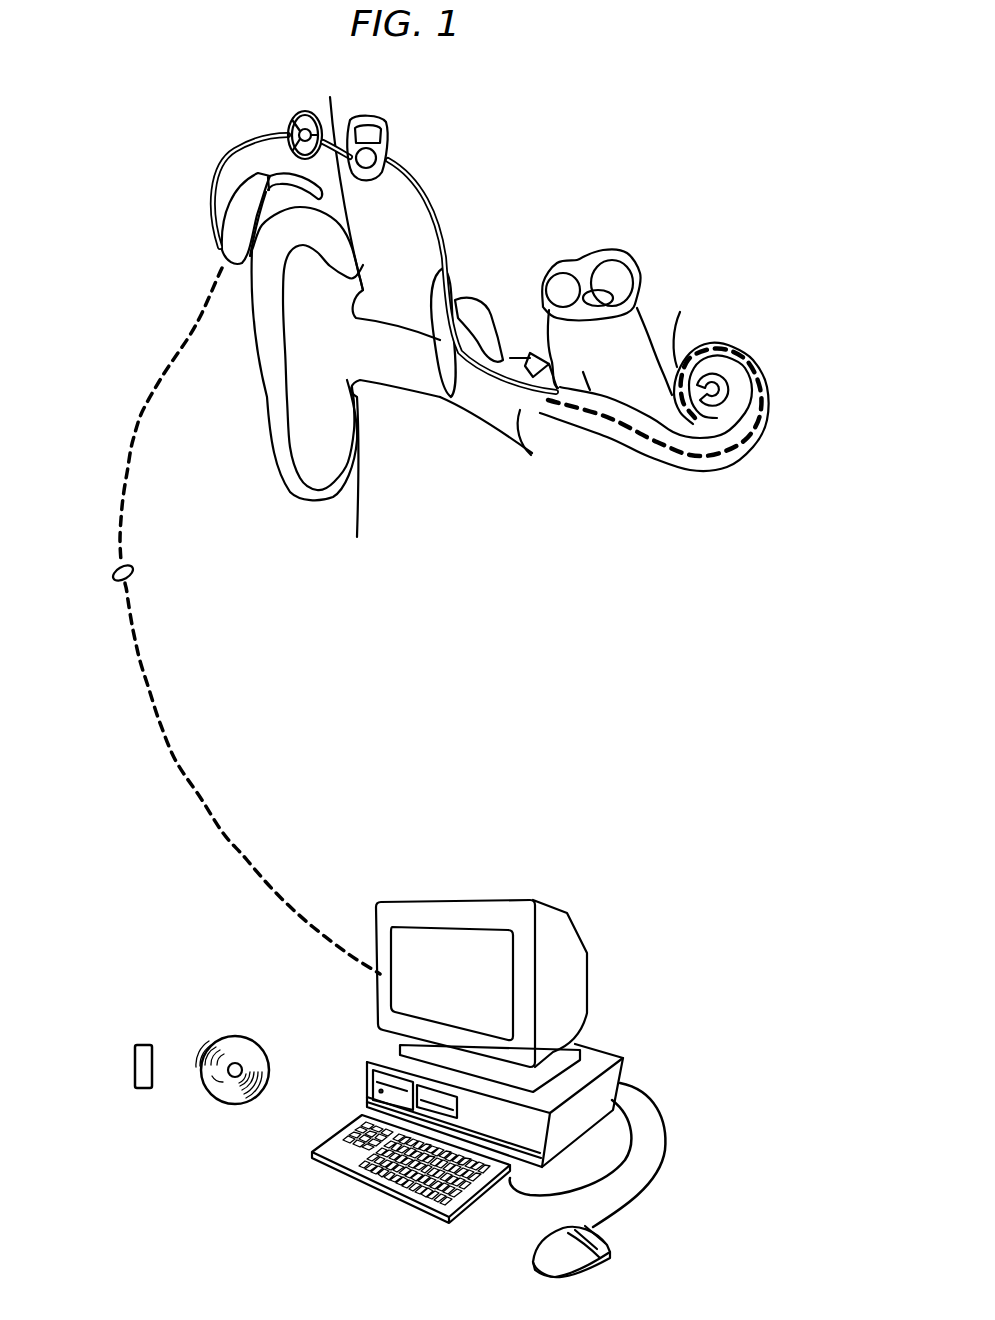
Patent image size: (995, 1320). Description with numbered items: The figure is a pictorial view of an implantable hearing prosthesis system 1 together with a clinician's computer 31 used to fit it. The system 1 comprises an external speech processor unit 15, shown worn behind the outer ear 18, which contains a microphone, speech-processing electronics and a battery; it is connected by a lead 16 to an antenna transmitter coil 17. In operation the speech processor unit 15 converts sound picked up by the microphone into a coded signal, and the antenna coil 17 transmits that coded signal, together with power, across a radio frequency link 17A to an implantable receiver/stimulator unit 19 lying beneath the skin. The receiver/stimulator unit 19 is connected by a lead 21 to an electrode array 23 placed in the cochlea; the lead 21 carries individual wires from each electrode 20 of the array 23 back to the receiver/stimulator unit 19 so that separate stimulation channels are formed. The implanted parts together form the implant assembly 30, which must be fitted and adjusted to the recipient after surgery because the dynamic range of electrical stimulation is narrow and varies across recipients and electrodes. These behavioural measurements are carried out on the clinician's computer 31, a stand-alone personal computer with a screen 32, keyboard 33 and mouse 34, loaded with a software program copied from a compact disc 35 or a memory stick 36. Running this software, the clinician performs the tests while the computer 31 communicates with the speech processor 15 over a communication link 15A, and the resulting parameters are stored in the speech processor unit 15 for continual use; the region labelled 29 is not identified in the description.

The implantable hearing prosthesis system 1 is at (546, 148).
The external speech processor unit 15 is at (221, 248).
The communication link 15A is at (117, 579).
The lead 16 is at (236, 155).
The antenna transmitter coil 17 is at (304, 111).
The radio frequency (RF) link 17A is at (324, 152).
The outer ear 18 is at (261, 370).
The implantable receiver/stimulator unit 19 is at (390, 137).
The electrode 20 is at (732, 455).
The lead 21 is at (442, 218).
The electrode array 23 is at (630, 446).
The oval window / lead entry 29 is at (588, 378).
The implant assembly 30 is at (527, 243).
The clinician's computer 31 is at (614, 856).
The screen 32 is at (590, 960).
The keyboard 33 is at (381, 1195).
The mouse 34 is at (585, 1274).
The compact disc (CD) 35 is at (232, 1038).
The memory stick 36 is at (144, 1042).